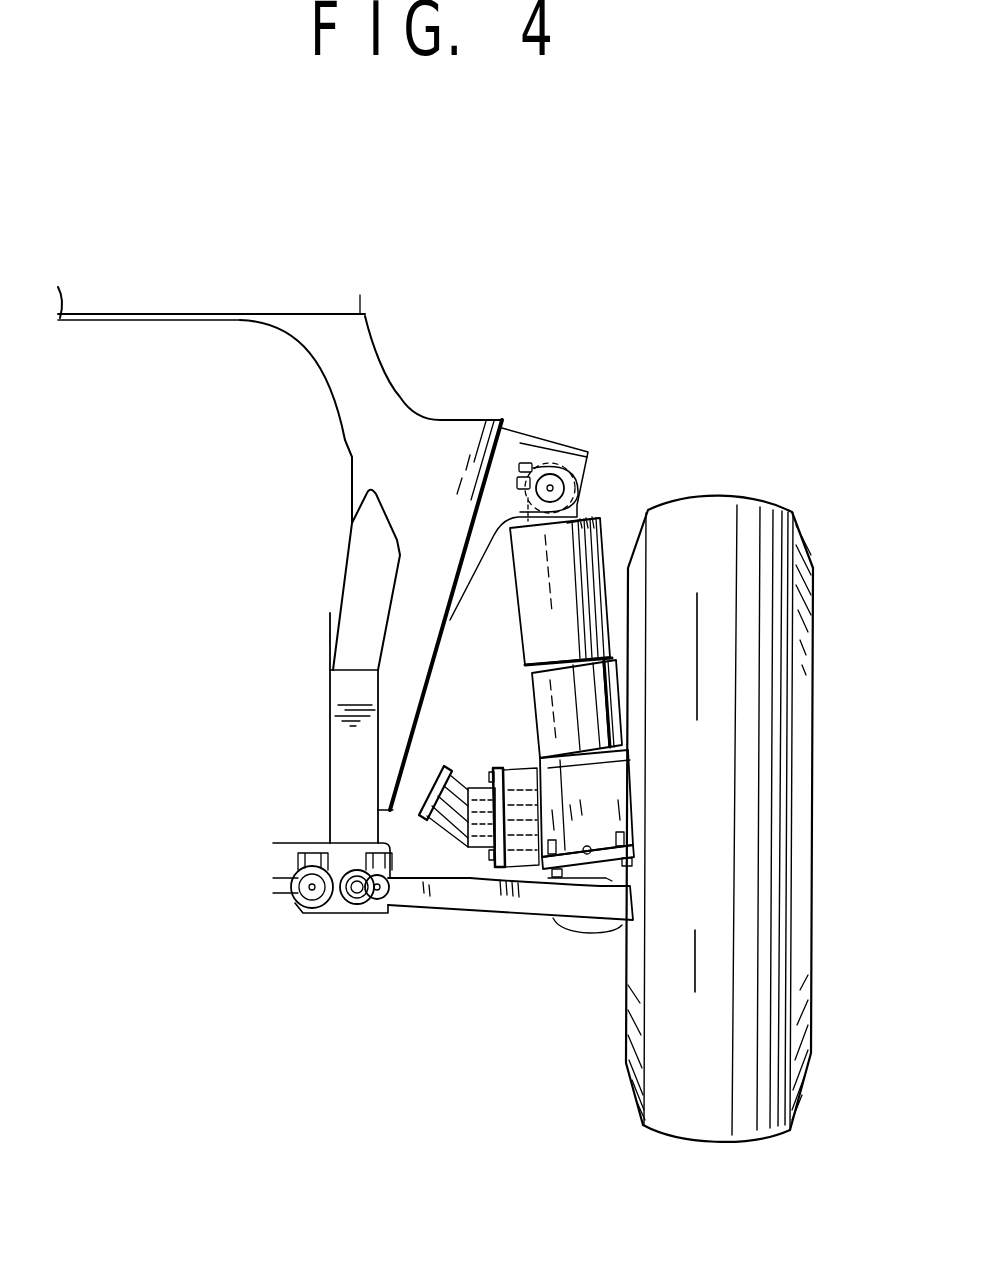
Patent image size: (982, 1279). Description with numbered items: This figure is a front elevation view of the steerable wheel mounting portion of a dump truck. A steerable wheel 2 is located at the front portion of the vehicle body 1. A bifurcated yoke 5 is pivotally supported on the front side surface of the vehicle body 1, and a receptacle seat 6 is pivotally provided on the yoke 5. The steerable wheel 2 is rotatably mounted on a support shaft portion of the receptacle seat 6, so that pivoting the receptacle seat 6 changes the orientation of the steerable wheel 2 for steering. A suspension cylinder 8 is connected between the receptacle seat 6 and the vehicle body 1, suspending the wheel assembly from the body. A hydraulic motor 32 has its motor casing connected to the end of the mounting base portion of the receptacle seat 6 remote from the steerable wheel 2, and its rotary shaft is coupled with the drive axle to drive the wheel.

The vehicle body 1 is at (347, 762).
The steerable wheels 2 is at (773, 698).
The bifurcated yokes 5 is at (487, 895).
The receptacle seat 6 is at (557, 788).
The suspension cylinder 8 is at (548, 627).
The hydraulic motor 32 is at (480, 792).